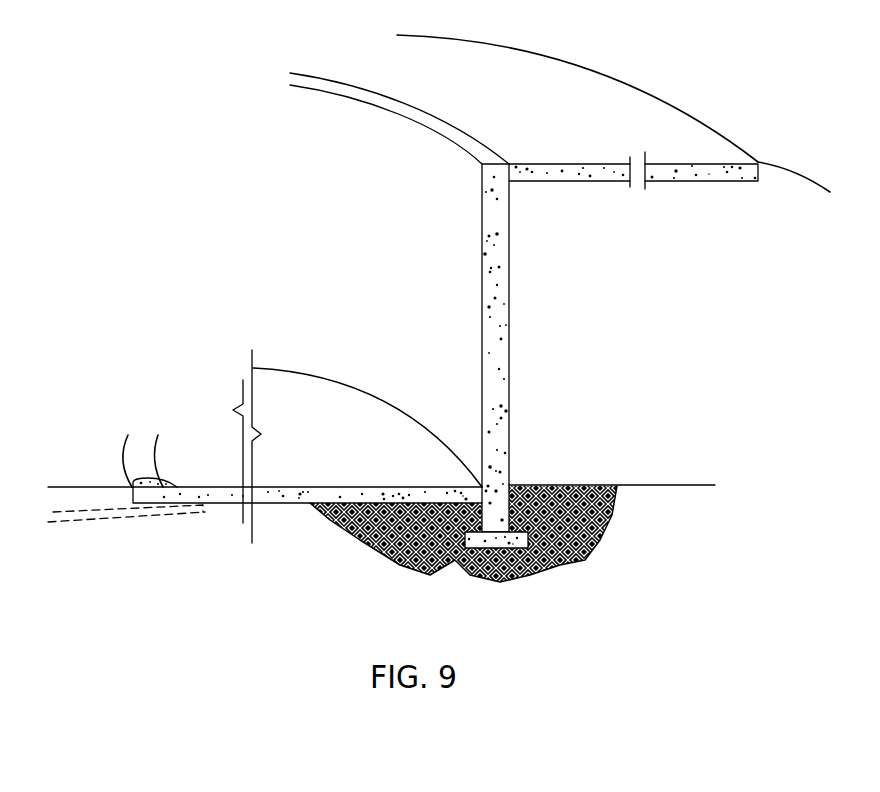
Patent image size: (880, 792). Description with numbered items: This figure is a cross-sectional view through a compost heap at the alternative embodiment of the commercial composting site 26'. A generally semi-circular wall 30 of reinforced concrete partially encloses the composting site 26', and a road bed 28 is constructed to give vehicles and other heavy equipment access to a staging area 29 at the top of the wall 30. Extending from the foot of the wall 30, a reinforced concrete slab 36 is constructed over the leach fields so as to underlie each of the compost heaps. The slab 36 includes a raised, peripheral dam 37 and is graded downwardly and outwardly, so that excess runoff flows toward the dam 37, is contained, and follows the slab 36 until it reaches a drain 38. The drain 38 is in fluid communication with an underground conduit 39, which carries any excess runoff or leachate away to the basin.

The commercial composting site 26' is at (327, 128).
The road bed 28 is at (600, 182).
The staging area 29 is at (480, 67).
The wall 30 is at (497, 357).
The reinforced concrete slab 36 is at (353, 423).
The raised peripheral dam 37 is at (137, 452).
The drain 38 is at (175, 490).
The underground conduit 39 is at (87, 518).